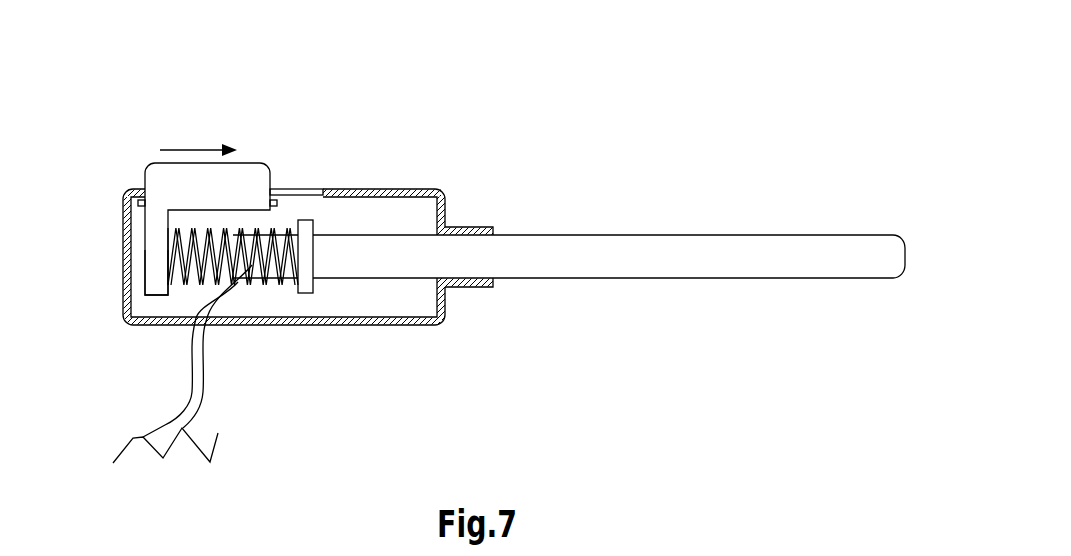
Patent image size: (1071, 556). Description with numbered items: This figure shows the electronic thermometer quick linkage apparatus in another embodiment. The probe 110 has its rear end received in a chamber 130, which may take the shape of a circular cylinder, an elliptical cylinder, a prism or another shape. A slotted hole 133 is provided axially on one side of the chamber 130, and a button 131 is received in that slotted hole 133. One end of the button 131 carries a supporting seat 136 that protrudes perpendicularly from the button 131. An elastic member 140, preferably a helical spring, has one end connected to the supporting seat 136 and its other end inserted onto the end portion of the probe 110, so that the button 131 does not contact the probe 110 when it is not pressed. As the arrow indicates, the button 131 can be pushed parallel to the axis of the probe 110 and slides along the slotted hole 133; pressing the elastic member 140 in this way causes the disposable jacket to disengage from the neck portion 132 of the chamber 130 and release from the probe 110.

The probe 110 is at (625, 253).
The chamber 130 is at (348, 307).
The button 131 is at (188, 187).
The neck portion 132 is at (478, 230).
The slotted hole 133 is at (292, 192).
The supporting seat 136 is at (155, 250).
The elastic member 140 is at (187, 270).